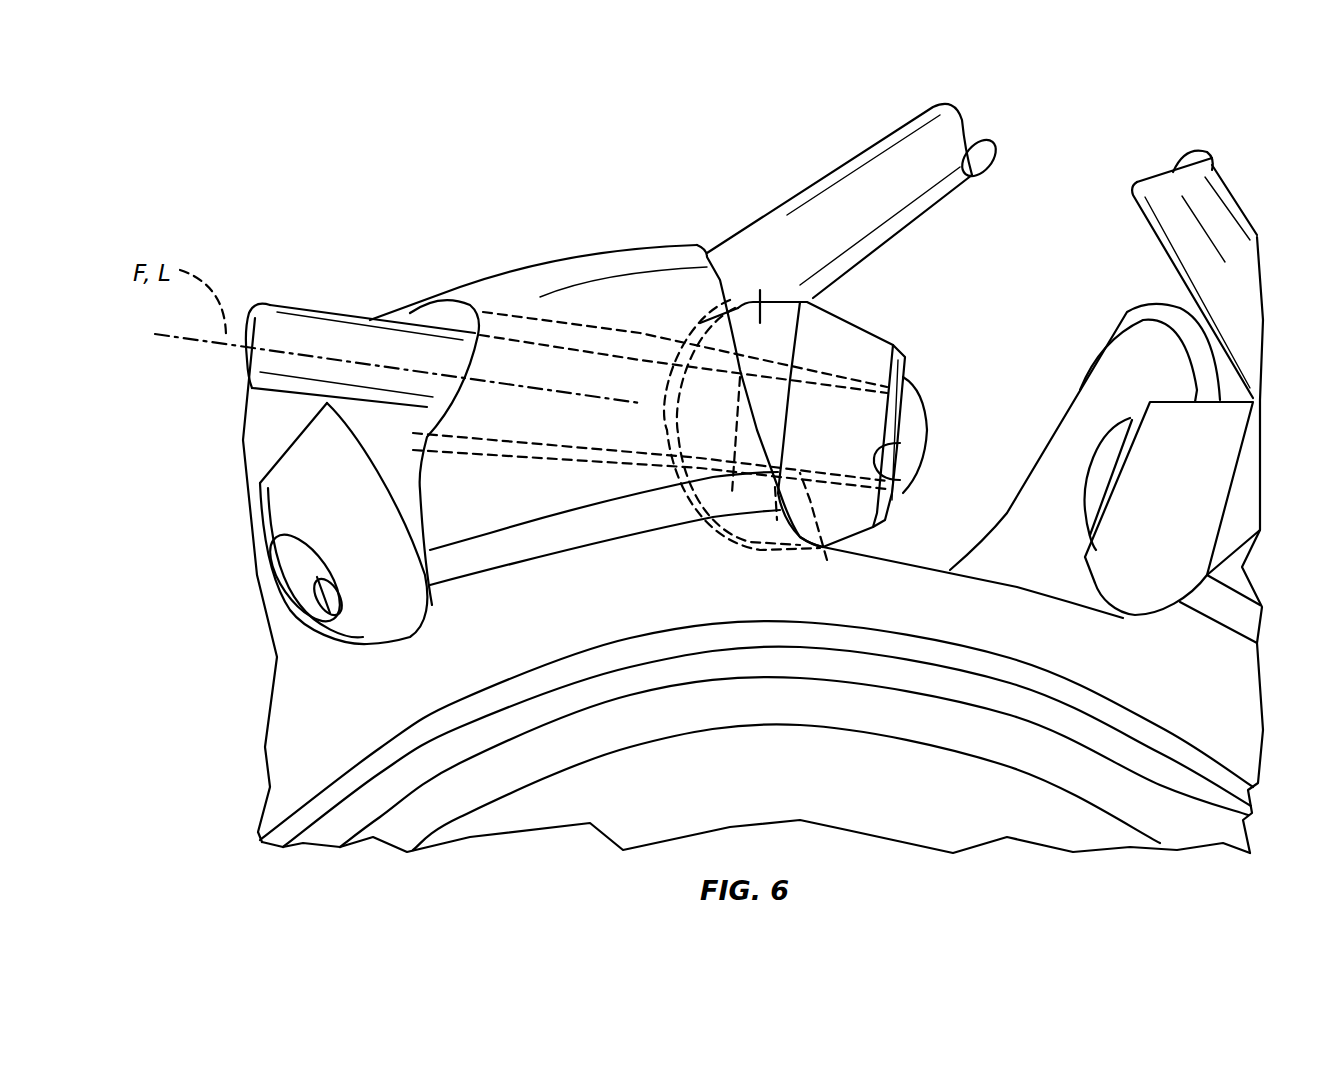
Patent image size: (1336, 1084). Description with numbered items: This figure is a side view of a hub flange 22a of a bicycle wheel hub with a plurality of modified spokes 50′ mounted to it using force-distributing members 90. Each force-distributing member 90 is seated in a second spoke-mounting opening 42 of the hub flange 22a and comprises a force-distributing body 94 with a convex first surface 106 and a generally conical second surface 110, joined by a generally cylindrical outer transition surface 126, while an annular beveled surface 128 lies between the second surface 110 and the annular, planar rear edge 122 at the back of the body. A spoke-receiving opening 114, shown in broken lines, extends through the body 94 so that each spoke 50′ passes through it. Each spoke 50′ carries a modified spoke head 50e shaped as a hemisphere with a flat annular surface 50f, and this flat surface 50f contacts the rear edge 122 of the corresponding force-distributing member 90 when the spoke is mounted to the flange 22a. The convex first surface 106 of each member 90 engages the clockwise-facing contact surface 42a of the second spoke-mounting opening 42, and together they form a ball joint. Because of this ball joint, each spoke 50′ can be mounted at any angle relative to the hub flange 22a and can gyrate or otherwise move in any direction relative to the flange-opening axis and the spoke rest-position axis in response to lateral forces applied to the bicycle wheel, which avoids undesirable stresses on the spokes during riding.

The hub flange 22a is at (540, 265).
The first surface 106 is at (695, 243).
The second spoke-mounting opening 42 is at (463, 322).
The contact surface 42a is at (717, 530).
The spoke-receiving opening 114 is at (827, 560).
The modified spoke 50′ is at (310, 312).
The force-distributing member 90 is at (232, 557).
The second surface 110 is at (283, 463).
The annular beveled surface 128 is at (272, 503).
The modified spoke head 50e is at (290, 598).
The flat annular surface 50f is at (333, 627).
The rear edge 122 is at (347, 617).
The outer transition surface 126 is at (373, 433).
The force-distributing body 94 is at (407, 640).